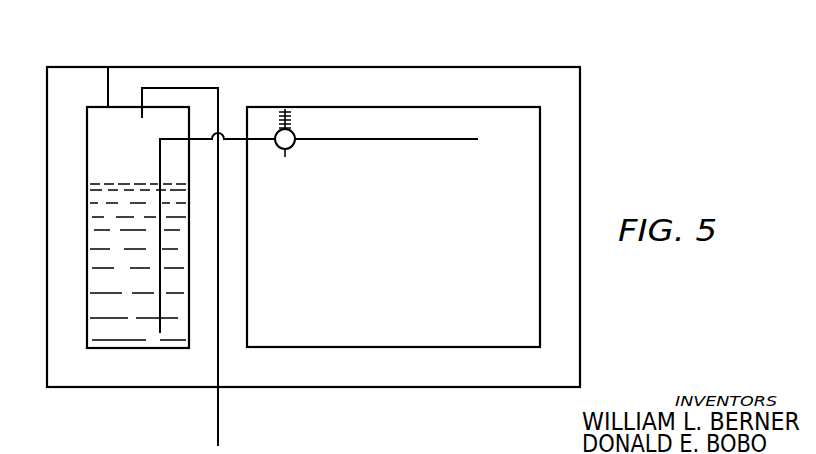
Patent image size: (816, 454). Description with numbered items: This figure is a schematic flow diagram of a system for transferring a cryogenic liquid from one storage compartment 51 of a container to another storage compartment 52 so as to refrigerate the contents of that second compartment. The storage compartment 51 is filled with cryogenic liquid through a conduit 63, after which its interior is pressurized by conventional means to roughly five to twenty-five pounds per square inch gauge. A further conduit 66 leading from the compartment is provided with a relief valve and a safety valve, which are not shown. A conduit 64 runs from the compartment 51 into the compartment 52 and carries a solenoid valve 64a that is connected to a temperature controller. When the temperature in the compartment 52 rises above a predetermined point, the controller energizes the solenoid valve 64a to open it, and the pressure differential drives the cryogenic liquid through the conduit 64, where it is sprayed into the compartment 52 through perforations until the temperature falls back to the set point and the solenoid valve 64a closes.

The storage compartment 51 is at (97, 135).
The storage compartment 52 is at (438, 235).
The conduit 63 is at (108, 82).
The conduit 64 is at (372, 139).
The solenoid valve 64a is at (289, 141).
The conduit 66 is at (219, 431).